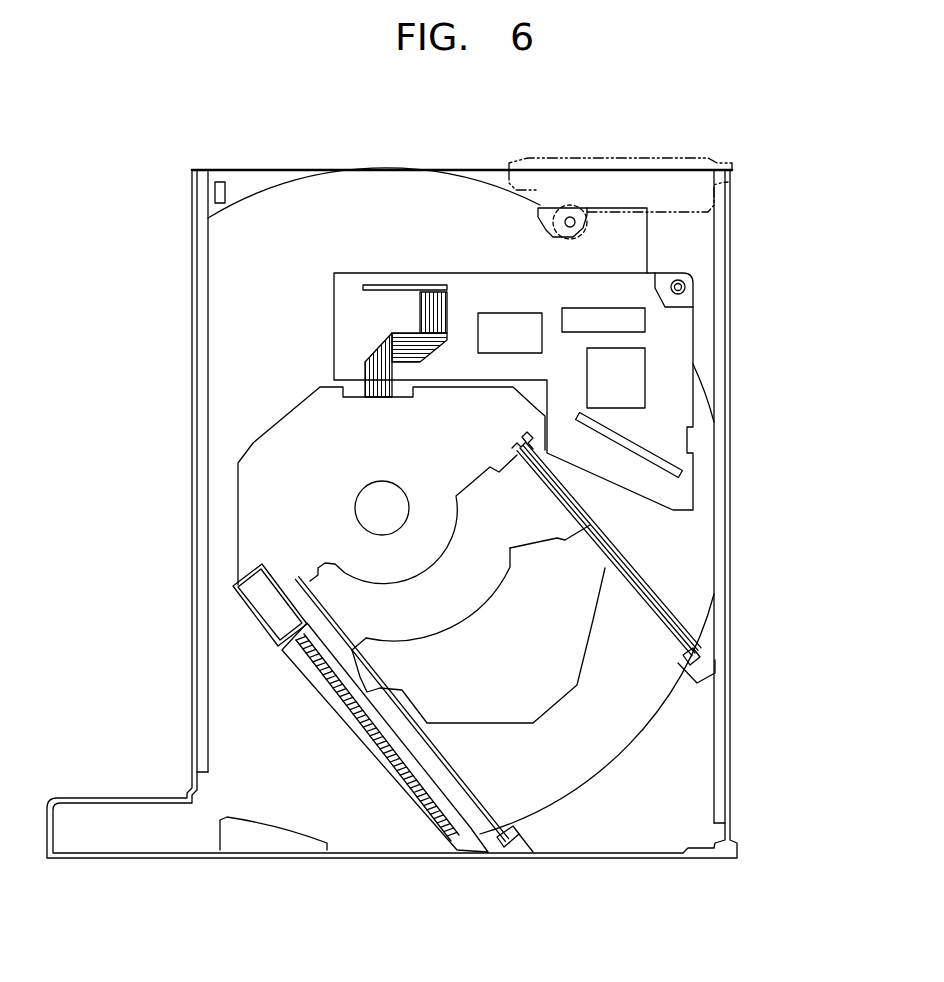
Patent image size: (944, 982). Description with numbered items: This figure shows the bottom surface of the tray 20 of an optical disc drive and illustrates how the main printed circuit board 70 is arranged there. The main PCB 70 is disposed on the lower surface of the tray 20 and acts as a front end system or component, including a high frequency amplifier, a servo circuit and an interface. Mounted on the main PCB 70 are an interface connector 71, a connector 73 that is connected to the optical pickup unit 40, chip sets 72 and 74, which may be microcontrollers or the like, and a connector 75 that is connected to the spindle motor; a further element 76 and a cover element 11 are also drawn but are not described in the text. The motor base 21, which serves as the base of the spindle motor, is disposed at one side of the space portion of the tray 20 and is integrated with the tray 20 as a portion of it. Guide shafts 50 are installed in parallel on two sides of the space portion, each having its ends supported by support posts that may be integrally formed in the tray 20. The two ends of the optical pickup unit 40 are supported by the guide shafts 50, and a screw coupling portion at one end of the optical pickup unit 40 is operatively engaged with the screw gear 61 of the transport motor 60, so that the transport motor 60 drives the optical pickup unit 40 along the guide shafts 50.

The cover 11 is at (625, 160).
The tray 20 is at (628, 866).
The motor base 21 is at (427, 560).
The optical pickup unit 40 is at (553, 690).
The guide shafts 50 is at (652, 616).
The transport motor 60 is at (253, 597).
The screw gear 61 is at (287, 645).
The main printed circuit board 70 is at (334, 308).
The interface connector 71 is at (604, 310).
The chip set 72 is at (510, 315).
The connector 73 is at (680, 473).
The chip set 74 is at (642, 376).
The connector 75 is at (401, 285).
The flexible printed cable 76 is at (447, 317).